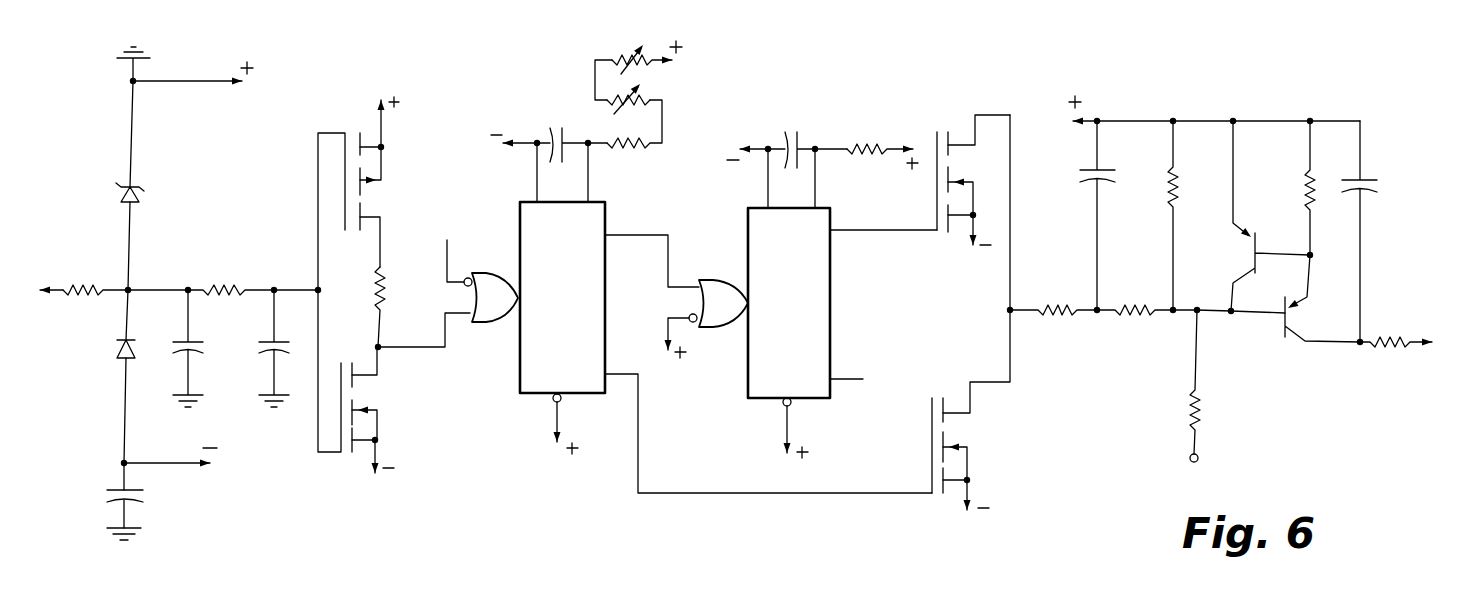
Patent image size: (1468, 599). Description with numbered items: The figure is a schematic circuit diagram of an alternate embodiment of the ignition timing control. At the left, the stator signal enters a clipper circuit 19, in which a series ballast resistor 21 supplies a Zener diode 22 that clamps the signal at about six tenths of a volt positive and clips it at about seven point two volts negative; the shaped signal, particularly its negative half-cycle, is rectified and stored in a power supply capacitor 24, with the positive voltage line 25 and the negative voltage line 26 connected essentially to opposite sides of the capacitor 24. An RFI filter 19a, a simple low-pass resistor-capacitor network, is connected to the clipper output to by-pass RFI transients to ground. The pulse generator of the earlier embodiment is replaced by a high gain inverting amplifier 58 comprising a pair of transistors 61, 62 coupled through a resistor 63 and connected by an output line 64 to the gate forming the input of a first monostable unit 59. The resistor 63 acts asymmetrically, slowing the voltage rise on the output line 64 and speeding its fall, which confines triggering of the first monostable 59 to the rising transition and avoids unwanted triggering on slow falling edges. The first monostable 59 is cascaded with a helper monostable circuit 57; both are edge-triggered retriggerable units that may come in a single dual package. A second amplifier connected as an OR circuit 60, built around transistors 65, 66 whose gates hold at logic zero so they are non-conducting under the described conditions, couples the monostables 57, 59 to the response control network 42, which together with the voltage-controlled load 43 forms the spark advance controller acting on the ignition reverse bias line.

The clipper circuit 19 is at (96, 205).
The RFI filter 19a is at (246, 356).
The series ballast resistor 21 is at (90, 287).
The Zener diode 22 is at (140, 196).
The power supply capacitor 24 is at (133, 493).
The positive voltage line 25 is at (197, 81).
The negative voltage line 26 is at (170, 462).
The response control network 42 is at (1142, 252).
The voltage-controlled load 43 is at (1281, 199).
The helper monostable circuit 57 is at (795, 310).
The high gain inverting amplifier 58 is at (356, 268).
The first monostable unit 59 is at (571, 313).
The OR circuit 60 is at (981, 325).
The transistor 61 is at (378, 195).
The transistor 62 is at (370, 401).
The resistor 63 is at (382, 292).
The output line 64 is at (422, 347).
The transistor 65 is at (918, 447).
The transistor 66 is at (953, 241).